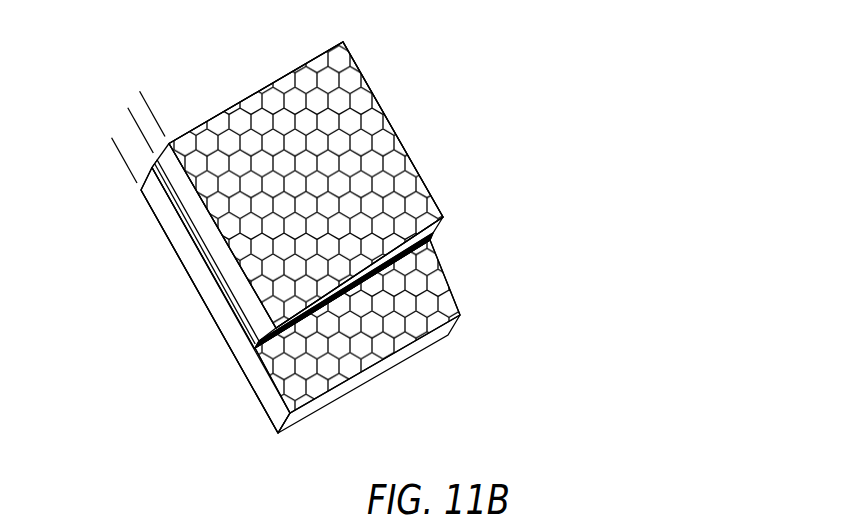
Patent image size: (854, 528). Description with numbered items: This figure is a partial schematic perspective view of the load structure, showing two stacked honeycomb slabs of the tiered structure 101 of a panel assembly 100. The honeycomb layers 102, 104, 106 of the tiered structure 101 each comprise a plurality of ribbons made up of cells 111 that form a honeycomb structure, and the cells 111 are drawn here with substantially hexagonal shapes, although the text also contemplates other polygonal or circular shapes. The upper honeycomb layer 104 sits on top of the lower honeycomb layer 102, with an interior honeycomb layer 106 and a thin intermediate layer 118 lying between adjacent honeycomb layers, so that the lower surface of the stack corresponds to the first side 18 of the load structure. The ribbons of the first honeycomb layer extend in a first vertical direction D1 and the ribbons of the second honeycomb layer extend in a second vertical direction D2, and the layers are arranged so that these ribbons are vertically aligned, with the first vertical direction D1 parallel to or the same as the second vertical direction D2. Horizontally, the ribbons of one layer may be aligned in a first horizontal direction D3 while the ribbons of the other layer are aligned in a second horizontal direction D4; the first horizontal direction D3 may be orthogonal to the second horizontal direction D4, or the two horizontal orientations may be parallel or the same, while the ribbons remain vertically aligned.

The first side 18 is at (437, 298).
The panel assembly 100 is at (362, 46).
The tiered structure 101 is at (306, 185).
The lower honeycomb layer 102 is at (446, 331).
The upper honeycomb layer 104 is at (156, 161).
The interior honeycomb layer 106 is at (215, 296).
The cells 111 is at (283, 92).
The intermediate layer 118 is at (140, 178).
The first vertical direction D1 is at (142, 134).
The second vertical direction D2 is at (147, 104).
The first horizontal direction D3 is at (312, 463).
The second horizontal direction D4 is at (160, 352).